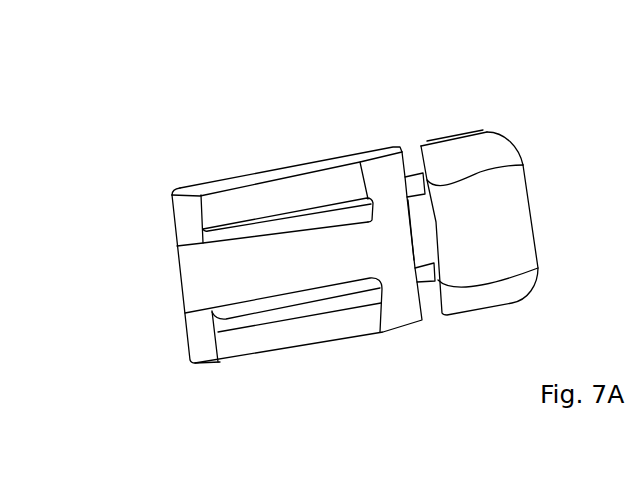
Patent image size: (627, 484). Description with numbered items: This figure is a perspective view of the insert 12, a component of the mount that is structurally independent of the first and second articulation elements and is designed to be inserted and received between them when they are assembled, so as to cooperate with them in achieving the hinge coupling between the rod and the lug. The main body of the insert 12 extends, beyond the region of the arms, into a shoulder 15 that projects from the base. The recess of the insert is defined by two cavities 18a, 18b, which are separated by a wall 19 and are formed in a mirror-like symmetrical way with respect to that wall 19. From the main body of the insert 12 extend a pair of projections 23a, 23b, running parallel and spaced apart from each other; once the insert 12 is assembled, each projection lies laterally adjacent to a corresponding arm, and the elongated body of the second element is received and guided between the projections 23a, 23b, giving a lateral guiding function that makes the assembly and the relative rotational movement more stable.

The insert 12 is at (296, 122).
The shoulder 15 is at (505, 172).
The cavity 18a is at (422, 290).
The cavity 18b is at (408, 174).
The wall 19 is at (427, 240).
The projection 23a is at (260, 320).
The projection 23b is at (230, 238).